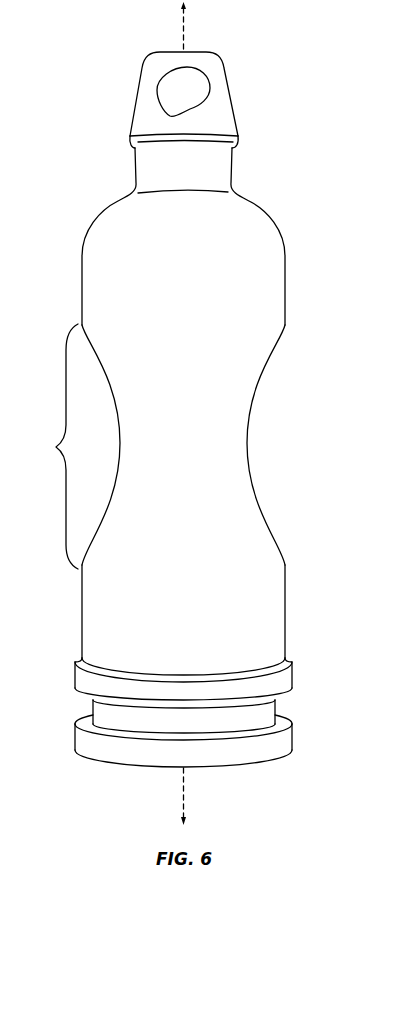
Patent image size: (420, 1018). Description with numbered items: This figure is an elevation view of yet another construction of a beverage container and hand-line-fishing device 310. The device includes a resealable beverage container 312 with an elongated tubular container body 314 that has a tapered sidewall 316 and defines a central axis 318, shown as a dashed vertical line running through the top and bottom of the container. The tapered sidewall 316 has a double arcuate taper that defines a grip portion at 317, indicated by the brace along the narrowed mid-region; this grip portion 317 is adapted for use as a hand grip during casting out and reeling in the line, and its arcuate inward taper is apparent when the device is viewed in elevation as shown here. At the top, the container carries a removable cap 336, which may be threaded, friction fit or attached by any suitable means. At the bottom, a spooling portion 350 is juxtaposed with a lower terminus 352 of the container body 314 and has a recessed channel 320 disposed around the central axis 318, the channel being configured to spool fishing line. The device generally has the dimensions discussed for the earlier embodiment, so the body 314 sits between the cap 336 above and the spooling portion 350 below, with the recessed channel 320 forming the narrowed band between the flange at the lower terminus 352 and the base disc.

The beverage container and hand-line-fishing device 310 is at (164, 411).
The resealable beverage container 312 is at (252, 198).
The elongated tubular container body 314 is at (198, 596).
The tapered sidewall 316 is at (267, 362).
The grip portion 317 is at (50, 446).
The central axis 318 is at (186, 36).
The recessed channel 320 is at (92, 702).
The removable cap 336 is at (228, 97).
The spooling portion 350 is at (278, 702).
The lower terminus 352 is at (287, 640).